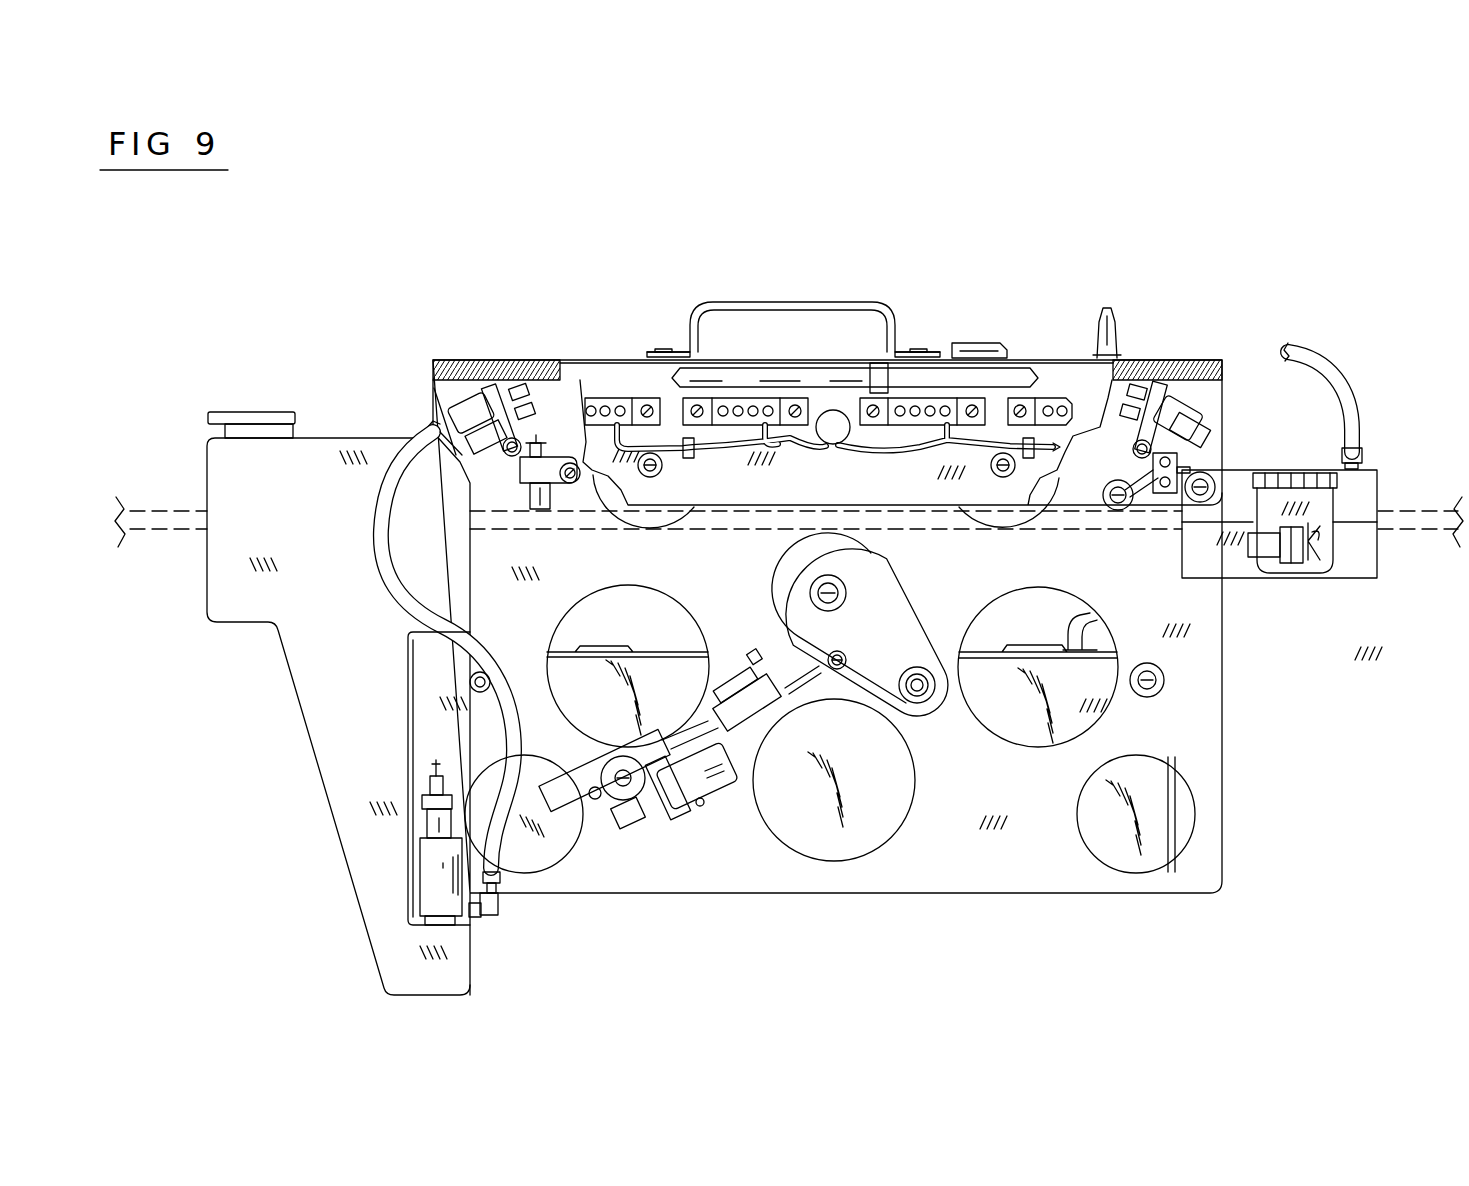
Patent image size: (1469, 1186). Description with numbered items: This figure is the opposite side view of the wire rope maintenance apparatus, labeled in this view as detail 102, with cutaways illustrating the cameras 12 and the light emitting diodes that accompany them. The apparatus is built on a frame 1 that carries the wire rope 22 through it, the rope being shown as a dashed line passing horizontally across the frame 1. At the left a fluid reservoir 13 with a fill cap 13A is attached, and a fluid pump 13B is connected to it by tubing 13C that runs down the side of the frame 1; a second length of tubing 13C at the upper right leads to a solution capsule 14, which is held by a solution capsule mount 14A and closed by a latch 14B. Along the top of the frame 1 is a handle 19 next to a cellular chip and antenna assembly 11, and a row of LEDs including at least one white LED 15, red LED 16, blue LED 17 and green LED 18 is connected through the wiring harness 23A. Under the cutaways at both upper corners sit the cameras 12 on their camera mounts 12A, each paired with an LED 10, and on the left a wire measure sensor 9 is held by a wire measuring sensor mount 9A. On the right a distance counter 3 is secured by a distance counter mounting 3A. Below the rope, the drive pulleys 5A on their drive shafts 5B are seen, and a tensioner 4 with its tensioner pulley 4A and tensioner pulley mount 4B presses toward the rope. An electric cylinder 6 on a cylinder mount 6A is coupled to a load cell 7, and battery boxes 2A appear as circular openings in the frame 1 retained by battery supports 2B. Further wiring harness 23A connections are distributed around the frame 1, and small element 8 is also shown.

The frame 1 is at (1187, 885).
The battery box 2A is at (657, 678).
The battery support 2B is at (470, 684).
The distance counter 3 is at (1110, 513).
The distance counter mounting 3A is at (1180, 460).
The tensioner 4 is at (873, 595).
The tensioner pulley 4A is at (765, 568).
The tensioner pulley mount 4B is at (918, 700).
The drive pulley 5A is at (648, 519).
The drive shaft 5B is at (663, 475).
The electric cylinder 6 is at (641, 804).
The cylinder mount 6A is at (594, 808).
The load cell 7 is at (768, 693).
The connector 8 is at (973, 343).
The wire measure sensor 9 is at (542, 512).
The wire measuring sensor mount 9A is at (566, 466).
The LED 10 is at (460, 453).
The cellular chip and antenna assembly 11 is at (1113, 322).
The camera 12 is at (452, 405).
The camera mount 12A is at (493, 390).
The fluid reservoir 13 is at (297, 653).
The fill cap 13A is at (270, 412).
The fluid pump 13B is at (430, 868).
The tubing 13C is at (418, 428).
The solution capsule 14 is at (1338, 567).
The solution capsule mount 14A is at (1212, 482).
The latch 14B is at (1325, 533).
The white LED 15 is at (595, 405).
The red LED 16 is at (738, 402).
The blue LED 17 is at (900, 400).
The green LED 18 is at (1058, 397).
The handle 19 is at (808, 301).
The wire rope 22 is at (176, 522).
The wiring harness 23A is at (662, 444).
The detail 102 is at (325, 325).